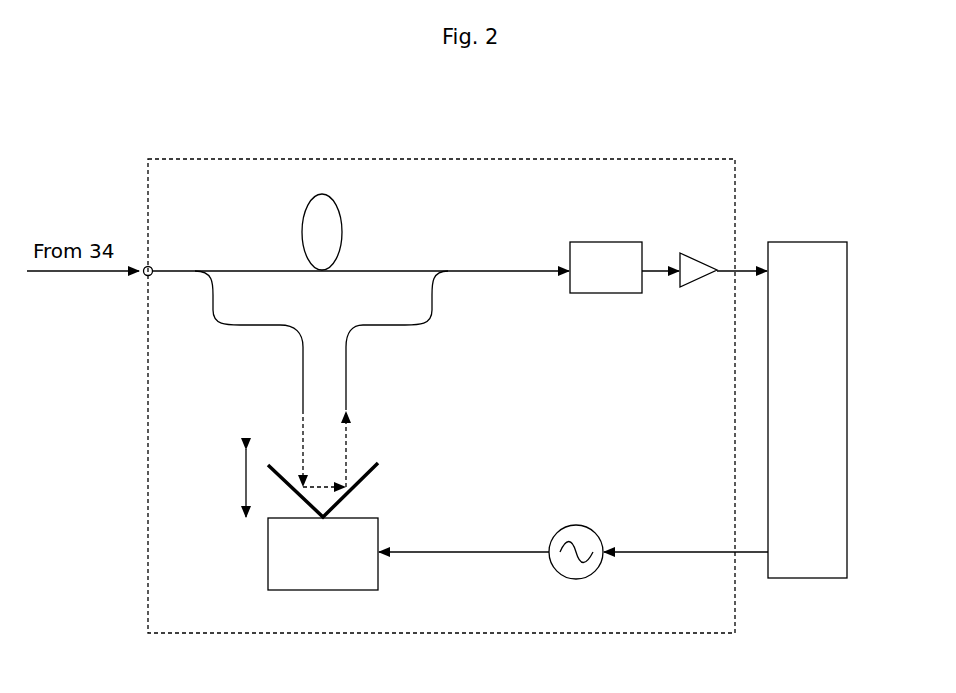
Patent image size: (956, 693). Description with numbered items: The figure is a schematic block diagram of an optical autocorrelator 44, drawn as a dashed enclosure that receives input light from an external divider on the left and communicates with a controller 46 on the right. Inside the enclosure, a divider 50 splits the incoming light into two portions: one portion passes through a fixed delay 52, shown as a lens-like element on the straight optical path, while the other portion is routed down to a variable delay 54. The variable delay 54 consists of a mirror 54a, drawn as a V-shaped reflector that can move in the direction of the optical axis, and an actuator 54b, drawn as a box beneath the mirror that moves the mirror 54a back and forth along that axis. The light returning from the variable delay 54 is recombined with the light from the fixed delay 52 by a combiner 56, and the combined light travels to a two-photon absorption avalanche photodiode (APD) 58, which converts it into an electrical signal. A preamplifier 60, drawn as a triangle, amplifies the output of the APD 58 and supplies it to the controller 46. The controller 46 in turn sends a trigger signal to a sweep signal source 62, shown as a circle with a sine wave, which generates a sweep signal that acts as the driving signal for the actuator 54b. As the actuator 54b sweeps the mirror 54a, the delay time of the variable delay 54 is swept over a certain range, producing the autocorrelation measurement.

The optical autocorrelator 44 is at (603, 182).
The controller 46 is at (808, 247).
The divider 50 is at (220, 277).
The fixed delay 52 is at (333, 222).
The variable delay 54 is at (320, 498).
The mirror 54a is at (372, 478).
The actuator 54b is at (273, 562).
The combiner 56 is at (420, 282).
The two-photon absorption avalanche photodiode (APD) 58 is at (615, 250).
The preamplifier 60 is at (695, 262).
The sweep signal source 62 is at (583, 533).